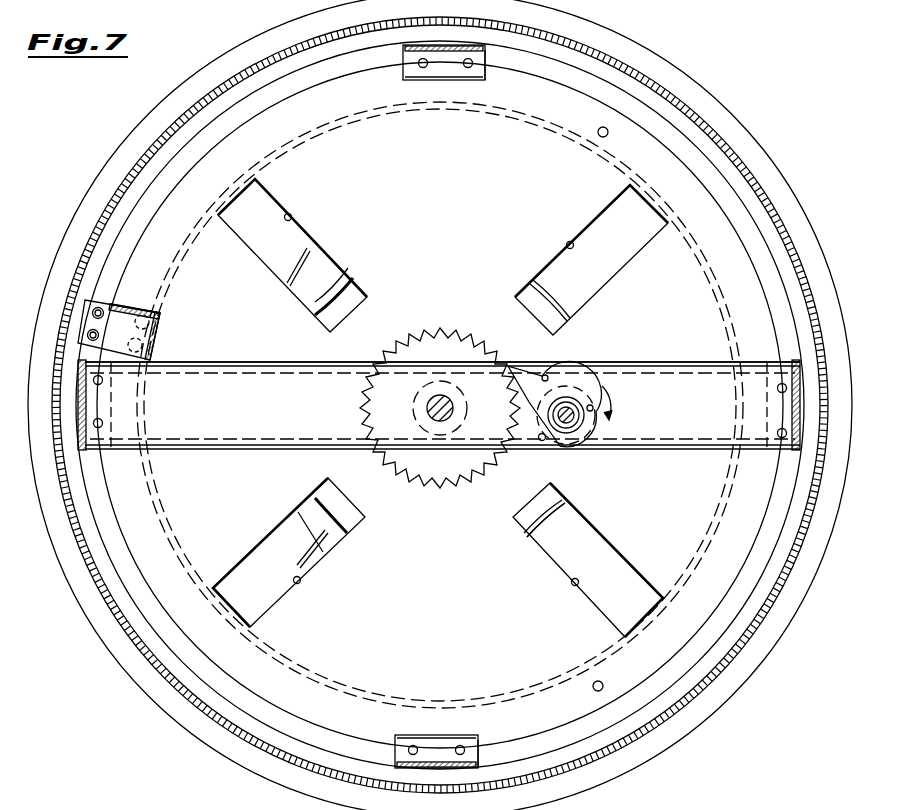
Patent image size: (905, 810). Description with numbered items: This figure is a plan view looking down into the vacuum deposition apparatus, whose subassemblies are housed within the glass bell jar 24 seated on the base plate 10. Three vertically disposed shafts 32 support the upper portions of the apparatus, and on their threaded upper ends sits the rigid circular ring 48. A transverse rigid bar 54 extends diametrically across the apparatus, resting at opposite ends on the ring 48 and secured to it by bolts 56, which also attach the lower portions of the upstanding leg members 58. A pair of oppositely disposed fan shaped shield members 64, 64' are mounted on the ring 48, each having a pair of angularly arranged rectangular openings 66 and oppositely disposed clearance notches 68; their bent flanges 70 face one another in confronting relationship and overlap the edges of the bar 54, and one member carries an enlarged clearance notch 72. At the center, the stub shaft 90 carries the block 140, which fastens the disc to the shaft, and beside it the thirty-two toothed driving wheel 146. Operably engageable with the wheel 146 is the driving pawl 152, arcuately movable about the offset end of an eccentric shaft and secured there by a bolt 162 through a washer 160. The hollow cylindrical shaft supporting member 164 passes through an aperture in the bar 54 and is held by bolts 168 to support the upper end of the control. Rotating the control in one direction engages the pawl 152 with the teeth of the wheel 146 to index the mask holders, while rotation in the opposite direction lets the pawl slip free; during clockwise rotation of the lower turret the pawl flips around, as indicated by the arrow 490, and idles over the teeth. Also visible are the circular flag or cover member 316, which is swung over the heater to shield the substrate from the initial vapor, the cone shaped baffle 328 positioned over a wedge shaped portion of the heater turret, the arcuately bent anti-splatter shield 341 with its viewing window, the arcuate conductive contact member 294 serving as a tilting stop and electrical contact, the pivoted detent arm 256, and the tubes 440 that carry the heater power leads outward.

The base plate 10 is at (130, 665).
The glass bell jar 24 is at (713, 138).
The circular flag or cover member 316 is at (806, 270).
The rigid circular ring 48 is at (718, 630).
The fan shaped shield member 64 is at (440, 405).
The fan shaped shield member 64' is at (435, 617).
The vertically disposed rods or shafts 32 is at (599, 128).
The transverse rigid bar 54 is at (253, 449).
The bent flanges 70 is at (291, 367).
The bolts 56 is at (103, 382).
The leg members 58 is at (403, 68).
The clearance cut outs or notches 68 is at (487, 75).
The rectangular openings 66 is at (289, 214).
The anti-splatter baffle or shield 341 is at (307, 248).
The arcuate conductive contact member 294 is at (335, 278).
The detent arm 256 is at (325, 550).
The cone shaped shield or baffle 328 is at (540, 533).
The enlarged clearance notch 72 is at (155, 320).
The tubes 440 is at (132, 312).
The thirty-two toothed driving wheel 146 is at (445, 340).
The stub shaft 90 is at (427, 408).
The block 140 is at (467, 410).
The driving pawl 152 is at (521, 366).
The washer 160 is at (568, 402).
The bolt 162 is at (577, 426).
The hollow cylindrical shaft supporting member 164 is at (534, 418).
The bolts 168 is at (546, 441).
The arrow 490 is at (612, 404).